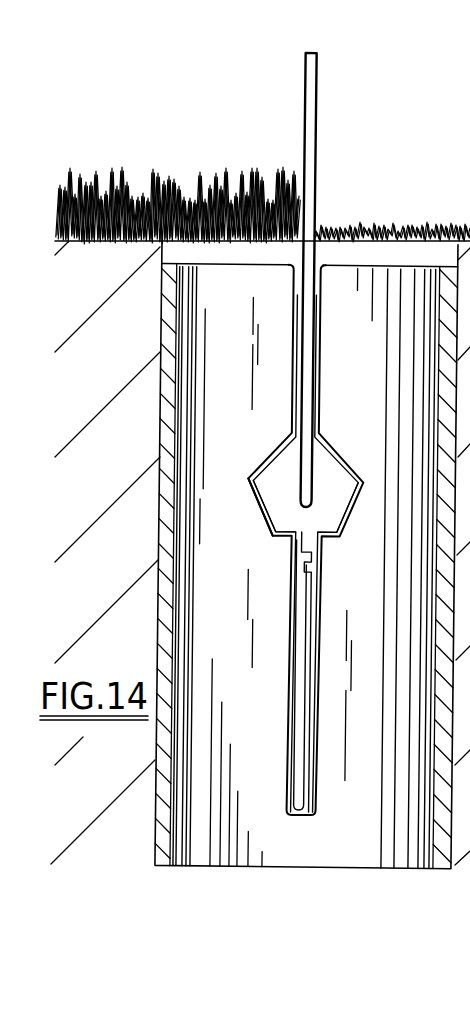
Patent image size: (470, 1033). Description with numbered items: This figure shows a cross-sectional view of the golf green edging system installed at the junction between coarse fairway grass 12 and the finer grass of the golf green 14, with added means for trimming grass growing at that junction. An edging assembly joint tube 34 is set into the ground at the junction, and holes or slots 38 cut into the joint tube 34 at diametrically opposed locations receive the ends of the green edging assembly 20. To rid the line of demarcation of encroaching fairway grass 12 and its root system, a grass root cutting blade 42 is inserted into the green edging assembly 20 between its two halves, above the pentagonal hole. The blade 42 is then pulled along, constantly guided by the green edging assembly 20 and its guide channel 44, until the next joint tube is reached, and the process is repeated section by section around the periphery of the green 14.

The coarse grass 12 is at (243, 166).
The golf green 14 is at (353, 222).
The green edging assembly 20 is at (274, 509).
The edging assembly joint tube 34 is at (257, 453).
The holes or slots 38 is at (316, 294).
The blade 42 is at (316, 113).
The guide channel 44 is at (344, 498).